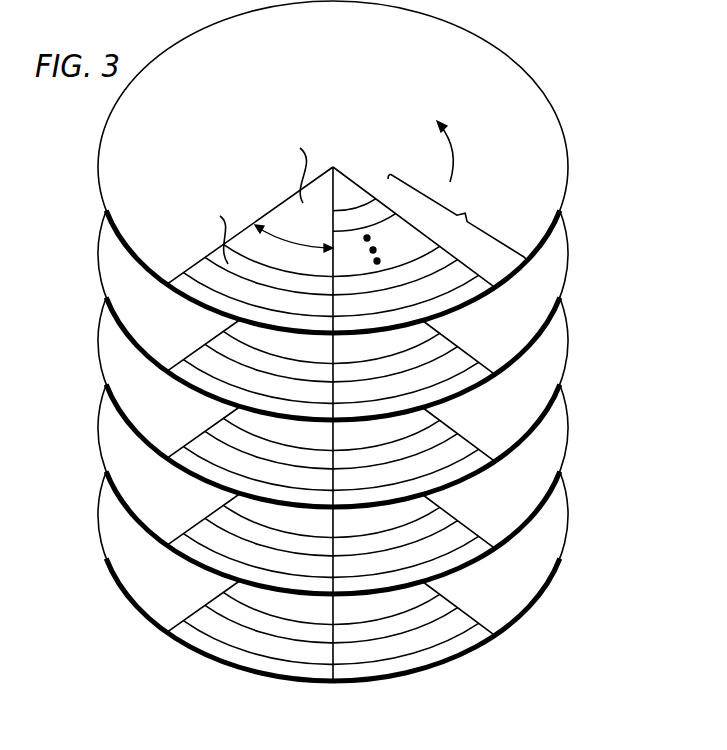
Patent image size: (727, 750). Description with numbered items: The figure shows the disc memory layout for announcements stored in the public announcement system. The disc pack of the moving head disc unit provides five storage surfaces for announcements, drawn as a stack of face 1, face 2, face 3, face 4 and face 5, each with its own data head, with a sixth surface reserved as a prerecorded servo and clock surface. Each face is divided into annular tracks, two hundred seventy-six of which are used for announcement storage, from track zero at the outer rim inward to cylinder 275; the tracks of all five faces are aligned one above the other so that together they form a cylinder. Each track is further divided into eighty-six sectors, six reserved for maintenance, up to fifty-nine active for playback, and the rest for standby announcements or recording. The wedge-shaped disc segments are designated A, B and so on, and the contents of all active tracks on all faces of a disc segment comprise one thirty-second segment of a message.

The face 1 is at (373, 168).
The face 2 is at (373, 317).
The face 3 is at (373, 404).
The face 4 is at (373, 491).
The face 5 is at (373, 578).
The cylinder 275 is at (397, 190).